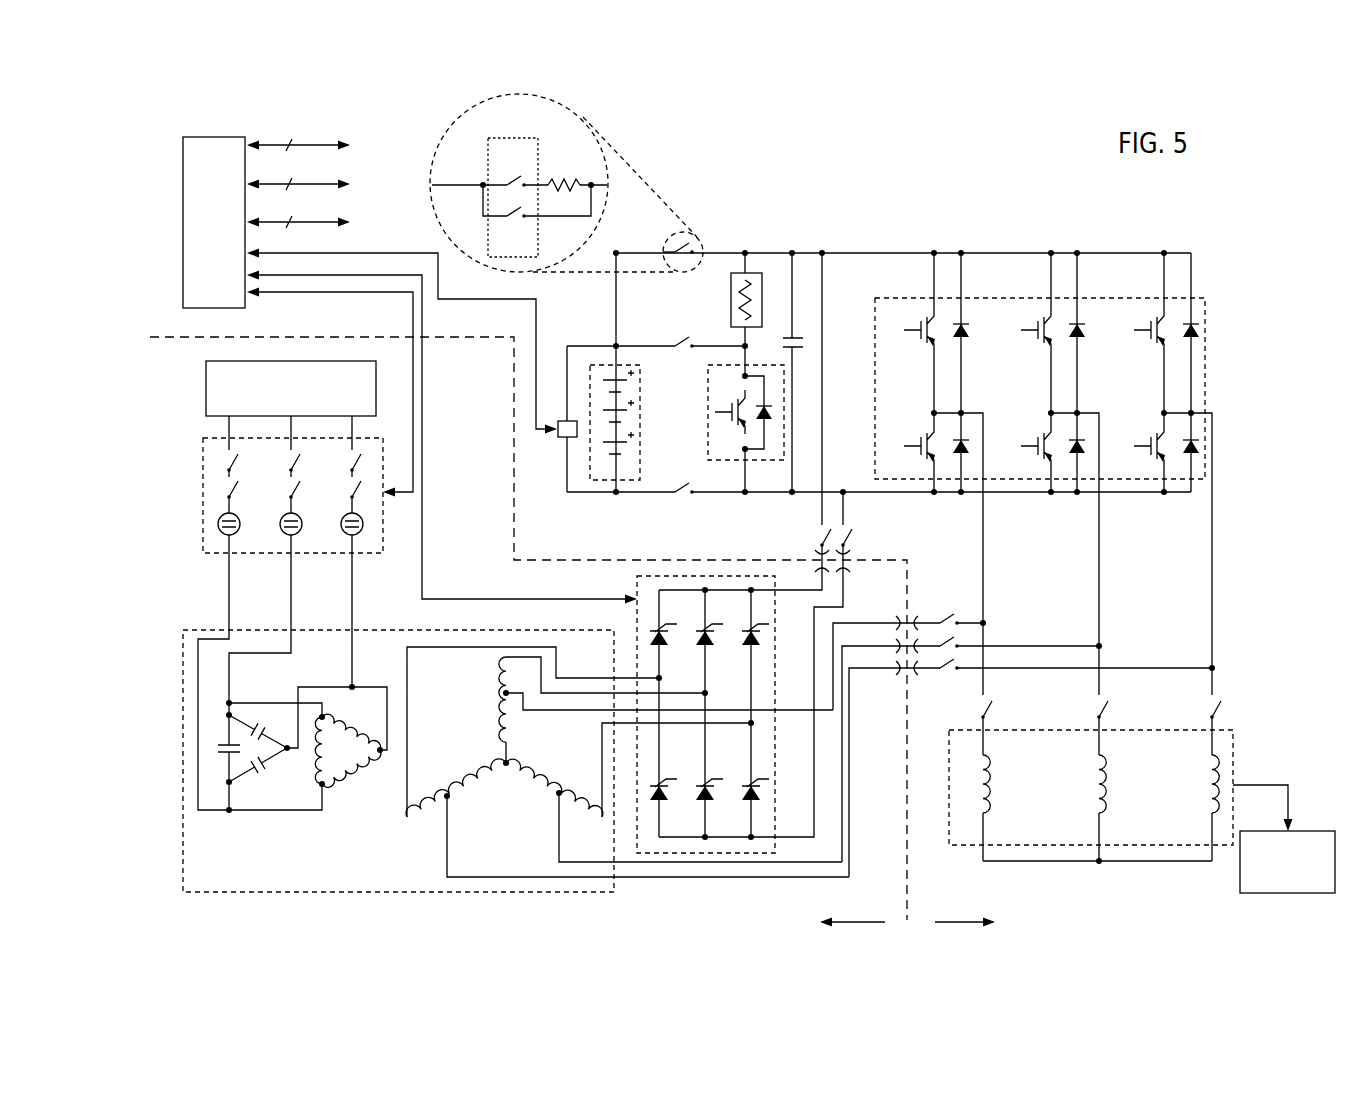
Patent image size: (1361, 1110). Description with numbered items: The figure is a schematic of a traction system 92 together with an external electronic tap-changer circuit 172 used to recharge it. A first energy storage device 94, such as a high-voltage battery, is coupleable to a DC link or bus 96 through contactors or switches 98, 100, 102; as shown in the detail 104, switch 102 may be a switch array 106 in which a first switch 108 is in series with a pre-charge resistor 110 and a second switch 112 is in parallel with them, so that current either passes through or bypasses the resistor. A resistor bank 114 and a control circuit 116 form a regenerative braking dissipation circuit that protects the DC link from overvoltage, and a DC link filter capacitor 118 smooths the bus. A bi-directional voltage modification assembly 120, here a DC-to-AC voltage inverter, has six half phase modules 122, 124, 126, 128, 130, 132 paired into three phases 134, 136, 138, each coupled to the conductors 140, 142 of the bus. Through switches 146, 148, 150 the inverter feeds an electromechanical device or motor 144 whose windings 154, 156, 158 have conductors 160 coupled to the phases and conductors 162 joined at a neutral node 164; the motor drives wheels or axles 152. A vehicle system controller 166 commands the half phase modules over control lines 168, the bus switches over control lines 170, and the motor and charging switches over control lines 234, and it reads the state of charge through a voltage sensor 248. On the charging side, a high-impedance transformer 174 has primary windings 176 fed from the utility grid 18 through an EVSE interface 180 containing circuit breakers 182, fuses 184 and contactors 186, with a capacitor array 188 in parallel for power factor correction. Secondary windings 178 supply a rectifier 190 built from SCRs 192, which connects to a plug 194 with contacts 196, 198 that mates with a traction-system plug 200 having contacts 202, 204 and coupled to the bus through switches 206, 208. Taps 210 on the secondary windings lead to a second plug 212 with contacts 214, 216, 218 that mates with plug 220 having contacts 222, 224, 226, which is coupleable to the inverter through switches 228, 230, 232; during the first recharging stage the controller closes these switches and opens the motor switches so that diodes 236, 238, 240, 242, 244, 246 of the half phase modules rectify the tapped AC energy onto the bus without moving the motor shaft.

The utility grid 18 is at (205, 373).
The traction system 92 is at (935, 156).
The first energy storage device 94 is at (640, 386).
The DC link or bus 96 is at (879, 382).
The switch 98 is at (693, 261).
The switch 100 is at (675, 342).
The switch 102 is at (675, 485).
The switch detail 104 is at (438, 154).
The switch array 106 is at (488, 160).
The first switch 108 is at (511, 178).
The pre-charge resistor 110 is at (567, 180).
The second switch 112 is at (510, 220).
The resistor bank 114 is at (730, 294).
The control circuit 116 is at (753, 462).
The DC link filter capacitor 118 is at (783, 336).
The bi-directional voltage modification assembly 120 is at (874, 330).
The half phase module 122 is at (903, 353).
The half phase module 124 is at (902, 468).
The half phase module 126 is at (1013, 353).
The half phase module 128 is at (1015, 468).
The half phase module 130 is at (1125, 353).
The half phase module 132 is at (1128, 468).
The phase 134 is at (926, 289).
The phase 136 is at (1041, 289).
The phase 138 is at (1154, 289).
The conductor 140 is at (778, 253).
The conductor 142 is at (719, 494).
The electromechanical device 144 is at (1075, 789).
The switch 146 is at (980, 719).
The switch 148 is at (1096, 719).
The switch 150 is at (1208, 719).
The driving wheels or axles 152 is at (1240, 878).
The winding 154 is at (994, 787).
The winding 156 is at (1107, 793).
The winding 158 is at (1208, 770).
The conductors 160 is at (986, 757).
The conductors 162 is at (988, 814).
The common or neutral node 164 is at (1148, 861).
The vehicle system controller 166 is at (209, 137).
The control lines 168 is at (310, 145).
The control lines 170 is at (310, 184).
The external electronic tap-changer circuit 172 is at (478, 576).
The high-impedance transformer 174 is at (182, 676).
The primary windings 176 is at (342, 814).
The secondary windings 178 is at (627, 762).
The EVSE interface 180 is at (273, 484).
The circuit breakers 182 is at (296, 462).
The fuses 184 is at (295, 493).
The contactors 186 is at (288, 523).
The capacitor array 188 is at (264, 785).
The rectifier 190 is at (724, 714).
The SCRs 192 is at (702, 650).
The receptacle or plug 194 is at (801, 564).
The contact 196 is at (818, 566).
The contact 198 is at (846, 566).
The plug 200 is at (775, 552).
The contact 202 is at (815, 544).
The contact 204 is at (850, 547).
The switch 206 is at (818, 526).
The switch 208 is at (843, 523).
The taps 210 is at (511, 708).
The receptacle or plug 212 is at (1022, 721).
The contact 214 is at (898, 671).
The contact 216 is at (898, 648).
The contact 218 is at (898, 626).
The plug 220 is at (930, 658).
The contact 222 is at (918, 682).
The contact 224 is at (925, 621).
The contact 226 is at (911, 617).
The switch 228 is at (970, 674).
The switch 230 is at (982, 642).
The switch 232 is at (966, 616).
The control lines 234 is at (310, 222).
The diode 236 is at (969, 334).
The diode 238 is at (963, 460).
The diode 240 is at (1084, 334).
The diode 242 is at (1081, 460).
The diode 244 is at (1202, 334).
The diode 246 is at (1193, 460).
The voltage sensor 248 is at (561, 438).